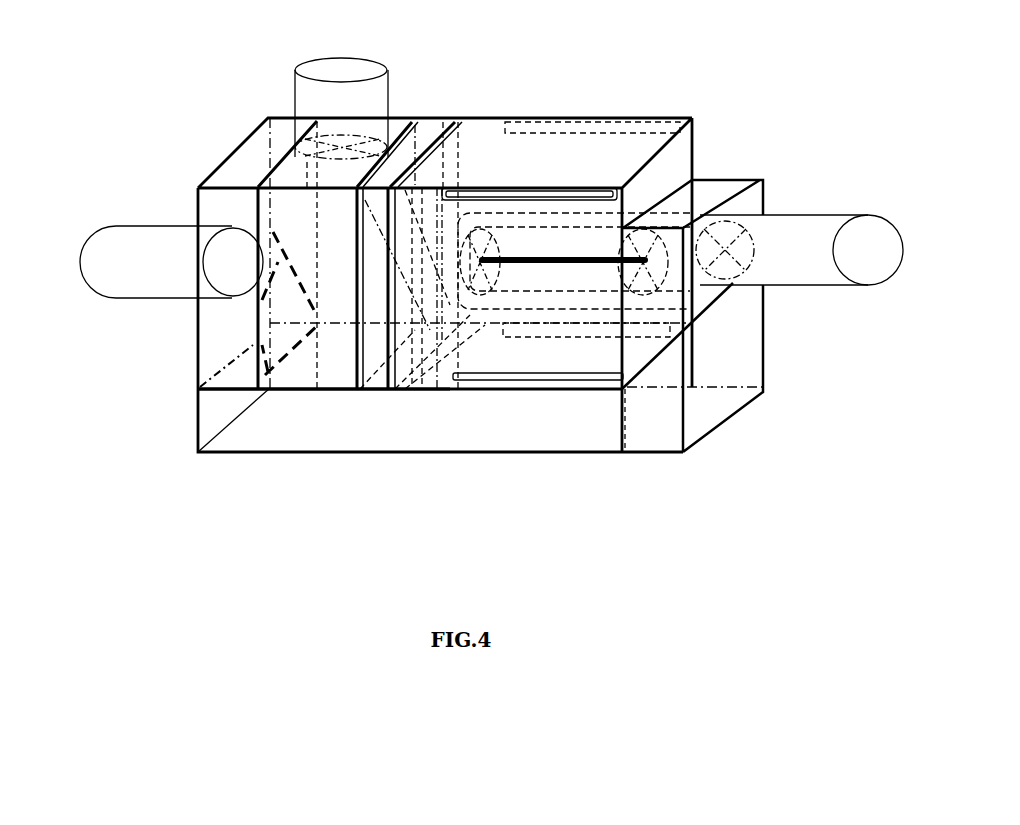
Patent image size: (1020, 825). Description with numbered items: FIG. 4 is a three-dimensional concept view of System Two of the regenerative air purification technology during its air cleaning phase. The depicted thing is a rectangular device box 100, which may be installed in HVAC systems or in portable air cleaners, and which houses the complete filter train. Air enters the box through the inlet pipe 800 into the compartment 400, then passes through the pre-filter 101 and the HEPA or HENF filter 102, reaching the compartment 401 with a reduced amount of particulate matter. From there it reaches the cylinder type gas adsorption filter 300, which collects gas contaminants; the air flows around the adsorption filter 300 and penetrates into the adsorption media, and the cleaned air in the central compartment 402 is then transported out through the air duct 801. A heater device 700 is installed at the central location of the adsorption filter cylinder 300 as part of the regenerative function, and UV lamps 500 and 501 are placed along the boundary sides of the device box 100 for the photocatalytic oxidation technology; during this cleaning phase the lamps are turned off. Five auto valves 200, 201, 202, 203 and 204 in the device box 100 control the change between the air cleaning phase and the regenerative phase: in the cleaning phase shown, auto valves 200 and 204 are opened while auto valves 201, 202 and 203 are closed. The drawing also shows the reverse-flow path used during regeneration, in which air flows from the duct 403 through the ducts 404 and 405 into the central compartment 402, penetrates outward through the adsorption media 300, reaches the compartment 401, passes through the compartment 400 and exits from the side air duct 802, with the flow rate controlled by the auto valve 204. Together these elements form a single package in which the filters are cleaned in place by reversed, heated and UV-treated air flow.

The device box 100 is at (196, 325).
The pre-filter 101 is at (378, 166).
The HEPA or HENF filter 102 is at (428, 172).
The auto valve 200 is at (287, 272).
The auto valve 201 is at (243, 365).
The auto valve 202 is at (346, 146).
The auto valve 203 is at (697, 293).
The auto valve 204 is at (734, 250).
The gas adsorption filter 300 is at (554, 228).
The compartment 400 is at (331, 228).
The compartment 401 is at (457, 346).
The compartment 402 is at (582, 290).
The duct 403 is at (241, 335).
The duct 404 is at (344, 423).
The duct 405 is at (713, 190).
The UV lamp 500 is at (480, 381).
The UV lamp 501 is at (588, 187).
The heater device 700 is at (518, 269).
The inlet pipe 800 is at (136, 252).
The air duct 801 is at (808, 262).
The side air duct 802 is at (324, 71).